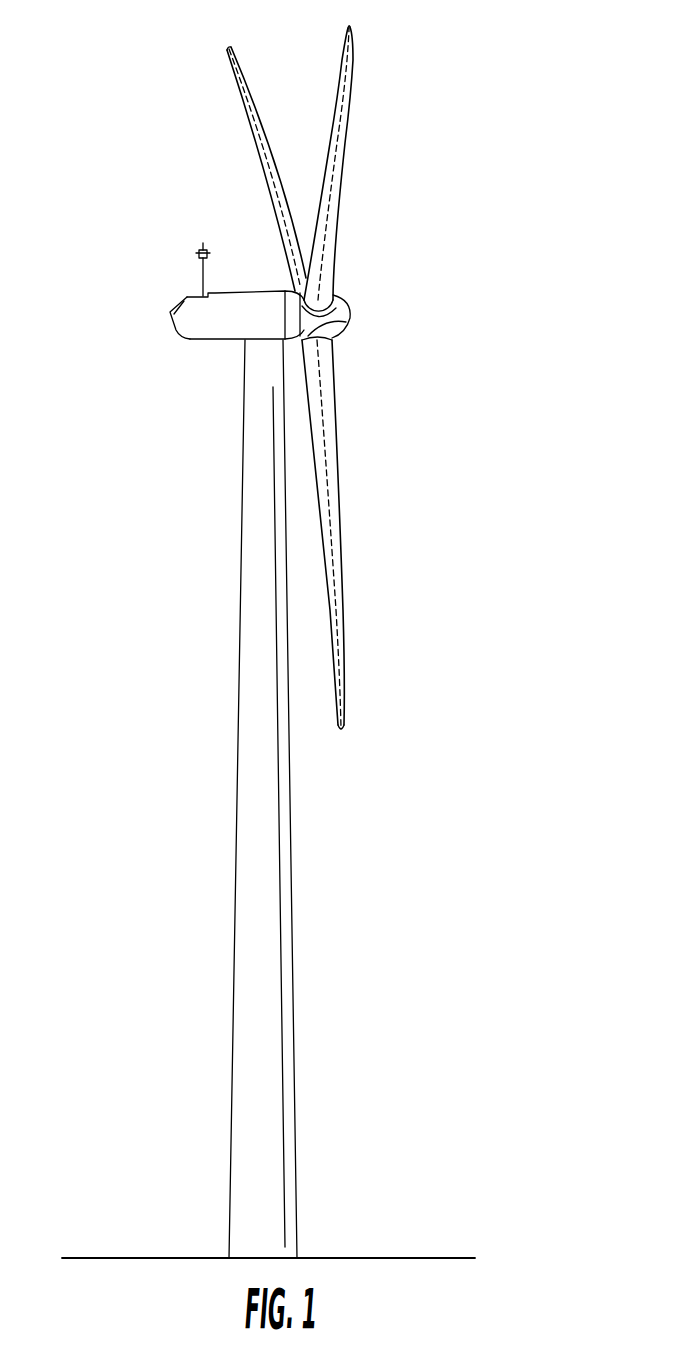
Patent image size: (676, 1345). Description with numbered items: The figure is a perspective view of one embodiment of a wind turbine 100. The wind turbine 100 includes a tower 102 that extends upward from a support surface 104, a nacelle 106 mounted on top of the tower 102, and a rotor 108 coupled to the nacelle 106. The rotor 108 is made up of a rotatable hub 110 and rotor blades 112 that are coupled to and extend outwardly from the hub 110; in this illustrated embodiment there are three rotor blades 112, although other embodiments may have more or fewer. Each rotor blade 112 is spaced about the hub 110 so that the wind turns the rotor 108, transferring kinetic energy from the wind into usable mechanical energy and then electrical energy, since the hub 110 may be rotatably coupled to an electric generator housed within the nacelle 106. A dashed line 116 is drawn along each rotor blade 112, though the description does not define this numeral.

The wind turbine 100 is at (475, 152).
The tower 102 is at (267, 921).
The support surface 104 is at (146, 1258).
The nacelle 106 is at (203, 340).
The rotor 108 is at (352, 288).
The rotatable hub 110 is at (343, 320).
The rotor blade 112 is at (333, 132).
The pitch axis 116 is at (281, 217).